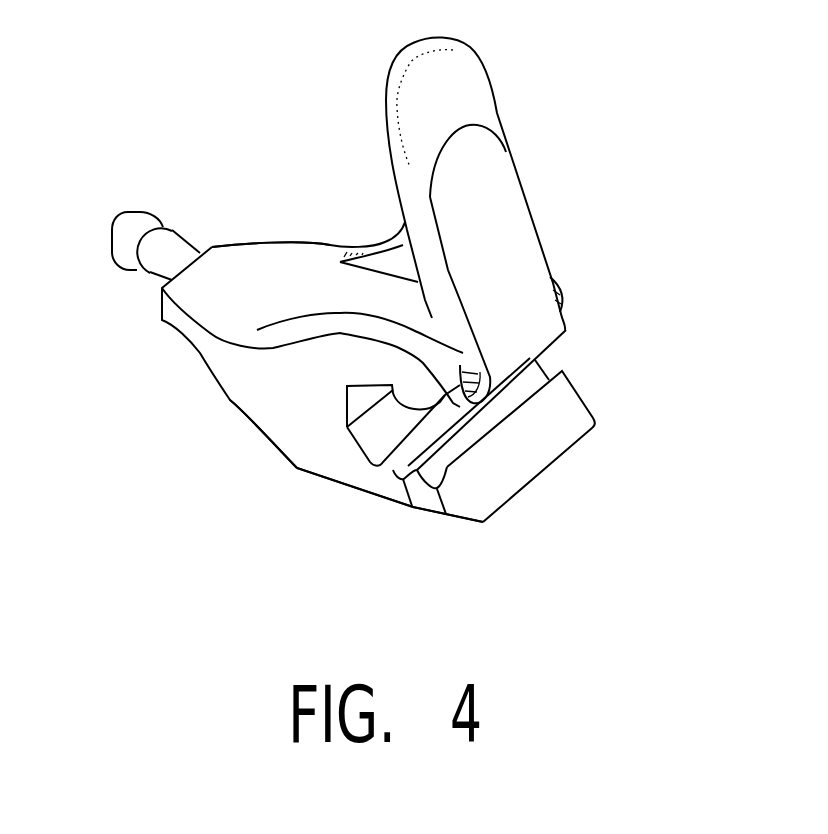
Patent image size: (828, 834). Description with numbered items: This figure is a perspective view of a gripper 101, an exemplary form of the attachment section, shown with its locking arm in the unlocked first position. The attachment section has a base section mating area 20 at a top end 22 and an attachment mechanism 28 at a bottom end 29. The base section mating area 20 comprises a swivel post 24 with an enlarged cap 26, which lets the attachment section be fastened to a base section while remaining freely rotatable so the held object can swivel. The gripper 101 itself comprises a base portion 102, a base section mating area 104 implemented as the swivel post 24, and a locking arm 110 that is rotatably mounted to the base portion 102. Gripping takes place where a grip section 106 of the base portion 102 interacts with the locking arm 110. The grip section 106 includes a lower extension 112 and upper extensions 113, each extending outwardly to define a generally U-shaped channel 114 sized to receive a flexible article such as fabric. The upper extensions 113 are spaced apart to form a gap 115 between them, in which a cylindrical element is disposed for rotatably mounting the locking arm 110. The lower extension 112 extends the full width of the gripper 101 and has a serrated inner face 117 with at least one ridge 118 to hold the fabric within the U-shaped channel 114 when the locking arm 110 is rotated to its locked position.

The gripper 101 is at (606, 114).
The base section mating area 20 is at (200, 250).
The top end 22 is at (170, 324).
The swivel post 24 is at (149, 273).
The enlarged cap 26 is at (128, 218).
The attachment mechanism 28 is at (527, 487).
The bottom end 29 is at (500, 510).
The base portion 102 is at (293, 467).
The base section mating area 104 is at (180, 243).
The grip section 106 is at (413, 506).
The locking arm 110 is at (523, 193).
The lower extension 112 is at (447, 517).
The upper extensions 113 is at (550, 275).
The U-shaped channel 114 is at (533, 362).
The gap 115 is at (523, 375).
The serrated inner face 117 is at (553, 467).
The ridge 118 is at (372, 468).